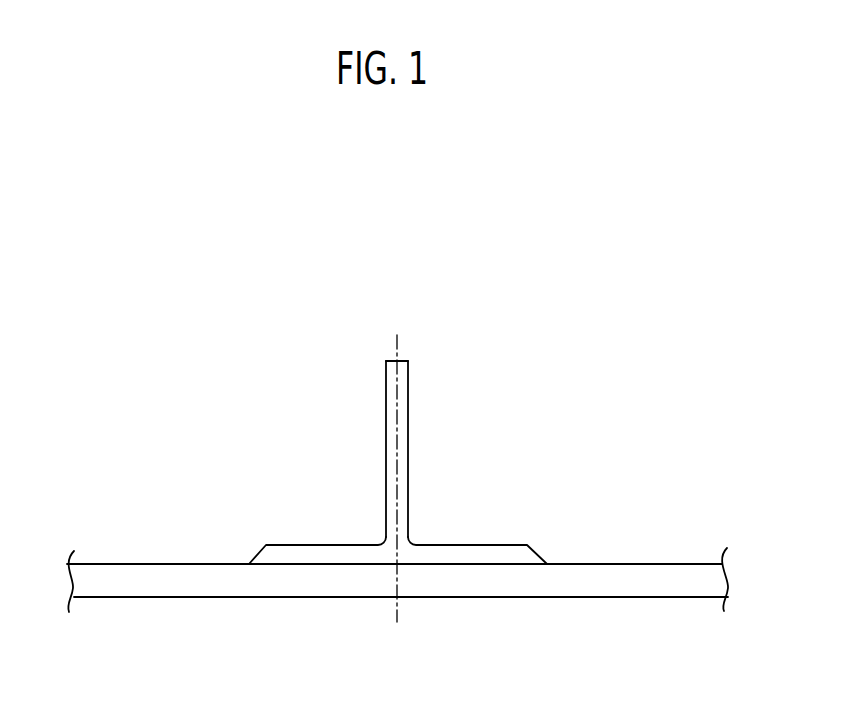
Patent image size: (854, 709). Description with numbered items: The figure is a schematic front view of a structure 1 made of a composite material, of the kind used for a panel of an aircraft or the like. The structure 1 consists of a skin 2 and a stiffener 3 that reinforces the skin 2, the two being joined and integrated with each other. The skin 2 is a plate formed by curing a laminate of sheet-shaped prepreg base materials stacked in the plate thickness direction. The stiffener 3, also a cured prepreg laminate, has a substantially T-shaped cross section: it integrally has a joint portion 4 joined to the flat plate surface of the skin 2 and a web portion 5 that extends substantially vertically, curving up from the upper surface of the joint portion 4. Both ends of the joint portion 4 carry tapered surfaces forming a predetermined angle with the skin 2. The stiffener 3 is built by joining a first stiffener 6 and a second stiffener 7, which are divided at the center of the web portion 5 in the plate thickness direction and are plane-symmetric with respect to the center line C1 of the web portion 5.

The structure 1 is at (556, 338).
The skin 2 is at (670, 575).
The stiffener 3 is at (452, 402).
The joint portion 4 is at (517, 557).
The web portion 5 is at (432, 450).
The first stiffener 6 is at (386, 467).
The second stiffener 7 is at (410, 502).
The center line C1 is at (396, 338).